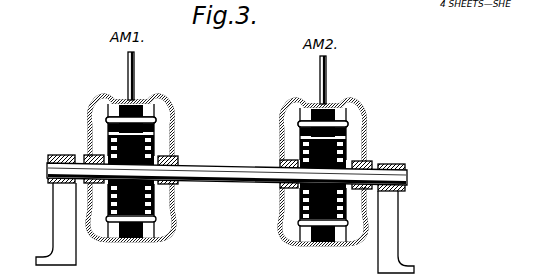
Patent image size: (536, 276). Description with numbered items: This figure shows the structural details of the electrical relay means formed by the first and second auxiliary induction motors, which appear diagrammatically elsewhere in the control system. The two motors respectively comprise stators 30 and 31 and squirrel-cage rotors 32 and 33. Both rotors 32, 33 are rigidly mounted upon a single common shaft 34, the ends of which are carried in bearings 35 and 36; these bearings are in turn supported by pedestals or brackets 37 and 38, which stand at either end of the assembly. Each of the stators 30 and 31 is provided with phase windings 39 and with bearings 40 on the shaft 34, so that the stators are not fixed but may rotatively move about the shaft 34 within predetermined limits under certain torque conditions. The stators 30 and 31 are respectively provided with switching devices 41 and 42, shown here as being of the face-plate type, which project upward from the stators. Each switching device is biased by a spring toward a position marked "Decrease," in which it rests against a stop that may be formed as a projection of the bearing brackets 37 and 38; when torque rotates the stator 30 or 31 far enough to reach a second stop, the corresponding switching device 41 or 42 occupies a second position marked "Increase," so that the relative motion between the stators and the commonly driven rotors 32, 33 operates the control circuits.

The stator 30 is at (93, 107).
The stator 31 is at (282, 114).
The squirrel-cage rotor 32 is at (158, 133).
The squirrel-cage rotor 33 is at (303, 140).
The shaft 34 is at (227, 168).
The bearing 35 is at (50, 158).
The bearing 36 is at (403, 165).
The pedestal or bracket 37 is at (60, 220).
The pedestal or bracket 38 is at (392, 242).
The phase windings 39 is at (155, 117).
The bearings 40 is at (88, 157).
The switching device 41 is at (134, 72).
The switching device 42 is at (327, 80).